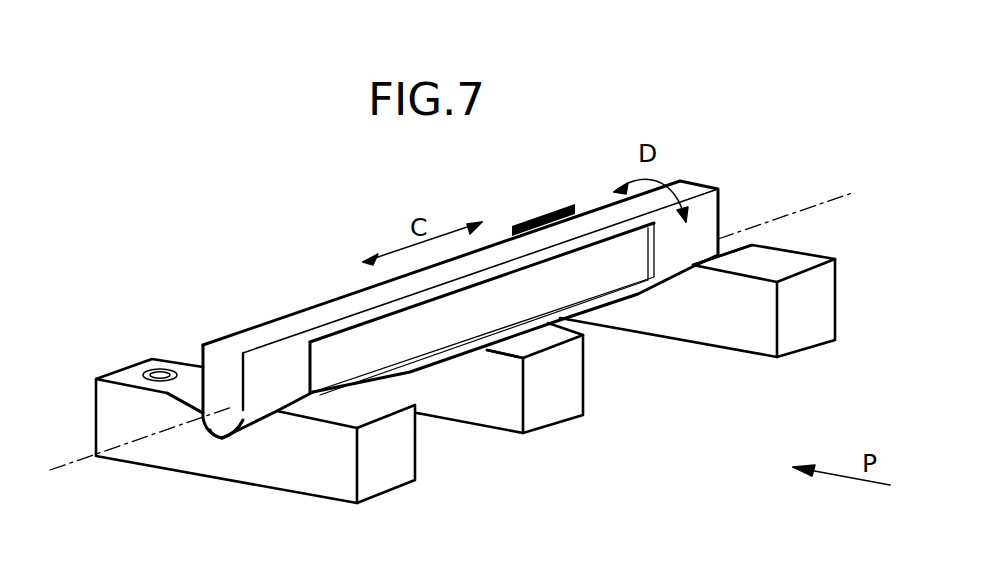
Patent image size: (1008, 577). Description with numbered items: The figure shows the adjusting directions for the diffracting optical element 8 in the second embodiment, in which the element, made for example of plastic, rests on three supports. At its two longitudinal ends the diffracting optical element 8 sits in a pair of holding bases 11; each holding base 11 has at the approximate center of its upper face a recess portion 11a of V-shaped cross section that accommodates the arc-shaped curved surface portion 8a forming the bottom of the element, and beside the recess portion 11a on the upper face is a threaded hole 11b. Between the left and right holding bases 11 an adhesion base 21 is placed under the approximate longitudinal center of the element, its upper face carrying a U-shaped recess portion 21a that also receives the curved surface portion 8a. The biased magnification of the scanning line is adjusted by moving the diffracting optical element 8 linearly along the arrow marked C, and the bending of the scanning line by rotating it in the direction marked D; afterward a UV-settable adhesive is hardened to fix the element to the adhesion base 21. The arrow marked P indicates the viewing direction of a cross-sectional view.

The diffracting optical element 8 is at (342, 350).
The curved surface portion 8a is at (222, 442).
The holding base 11 is at (810, 330).
The recess portion 11a is at (185, 383).
The threaded hole 11b is at (157, 369).
The adhesion base 21 is at (553, 402).
The recess portion 21a is at (463, 353).